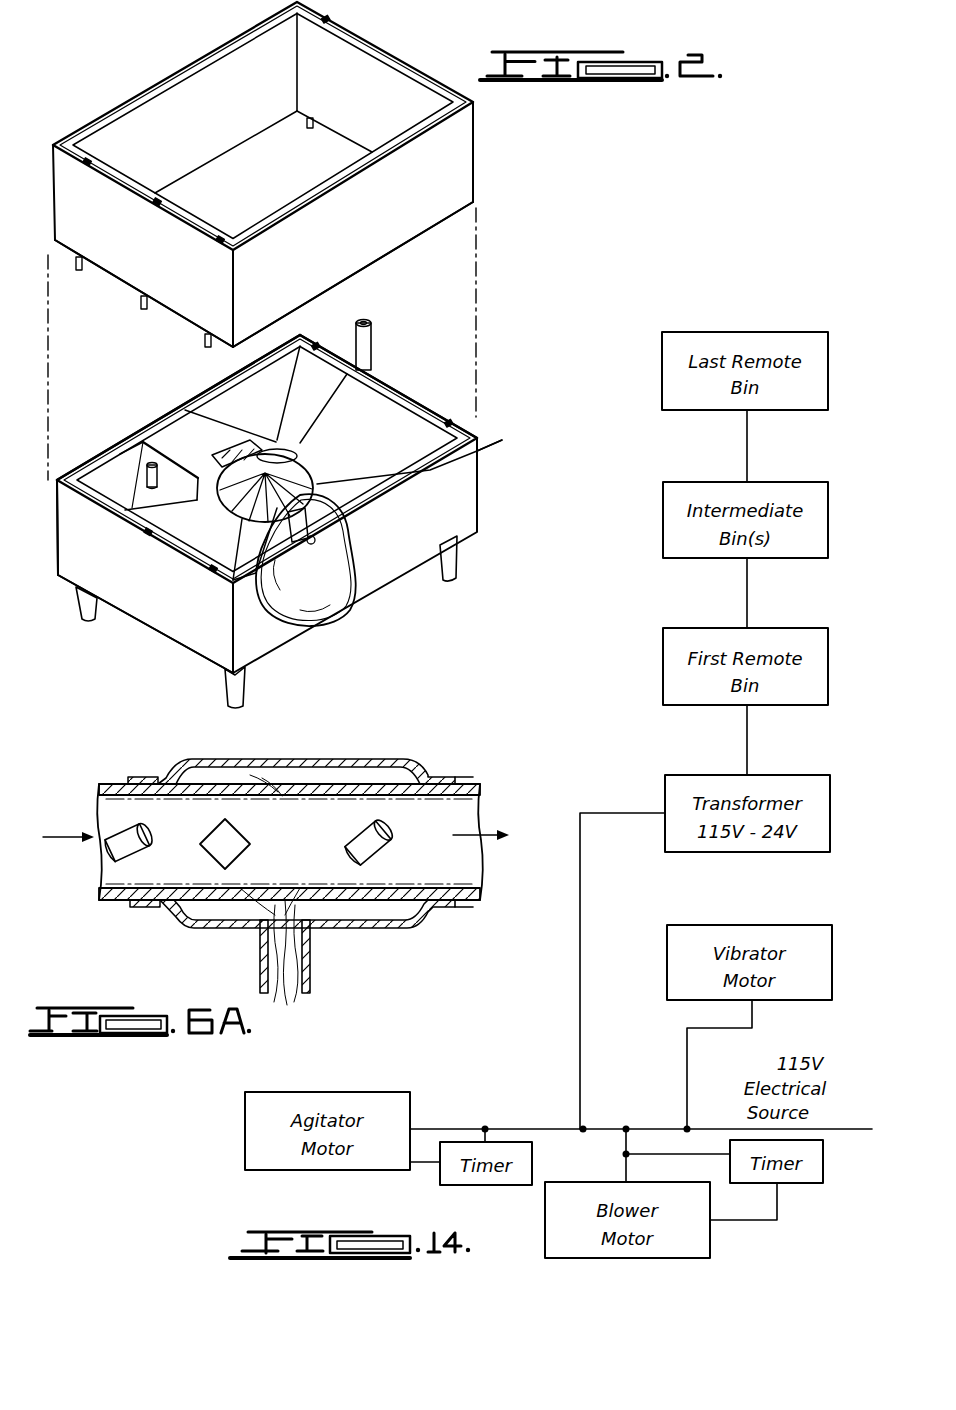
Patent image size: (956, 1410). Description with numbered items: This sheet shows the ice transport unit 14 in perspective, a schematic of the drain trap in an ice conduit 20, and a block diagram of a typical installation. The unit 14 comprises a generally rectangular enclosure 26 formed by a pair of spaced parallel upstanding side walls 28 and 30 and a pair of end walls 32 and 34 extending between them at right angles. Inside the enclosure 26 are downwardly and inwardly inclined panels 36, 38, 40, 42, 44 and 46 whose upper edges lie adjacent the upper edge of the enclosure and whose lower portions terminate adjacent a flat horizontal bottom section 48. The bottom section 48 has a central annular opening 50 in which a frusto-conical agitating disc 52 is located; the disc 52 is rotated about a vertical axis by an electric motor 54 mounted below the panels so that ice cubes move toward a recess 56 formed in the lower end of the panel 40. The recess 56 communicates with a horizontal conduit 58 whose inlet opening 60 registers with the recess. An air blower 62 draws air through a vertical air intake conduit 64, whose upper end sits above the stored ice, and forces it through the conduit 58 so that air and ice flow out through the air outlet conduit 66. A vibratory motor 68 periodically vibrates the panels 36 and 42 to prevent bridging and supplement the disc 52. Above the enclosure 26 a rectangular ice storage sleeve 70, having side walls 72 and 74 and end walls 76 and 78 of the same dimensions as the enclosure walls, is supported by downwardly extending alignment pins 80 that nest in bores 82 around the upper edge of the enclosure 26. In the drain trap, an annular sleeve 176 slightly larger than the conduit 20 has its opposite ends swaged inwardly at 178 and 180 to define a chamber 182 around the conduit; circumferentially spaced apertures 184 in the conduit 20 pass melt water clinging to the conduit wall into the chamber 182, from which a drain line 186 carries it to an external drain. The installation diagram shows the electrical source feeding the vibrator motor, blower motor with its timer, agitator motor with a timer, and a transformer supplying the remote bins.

In FIG. 2, the ice transport unit 14 is at (494, 485).
In FIG. 6A, the conduit 20 is at (479, 776).
In FIG. 2, the enclosure 26 is at (168, 641).
In FIG. 2, the side wall 28 is at (393, 574).
In FIG. 2, the side wall 30 is at (183, 403).
In FIG. 2, the end wall 32 is at (385, 392).
In FIG. 2, the end wall 34 is at (130, 593).
In FIG. 2, the inclined panel 36 is at (409, 450).
In FIG. 2, the inclined panel 38 is at (288, 403).
In FIG. 2, the inclined panel 40 is at (224, 450).
In FIG. 2, the inclined panel 42 is at (220, 547).
In FIG. 2, the inclined panel 44 is at (358, 498).
In FIG. 2, the inclined panel 46 is at (501, 451).
In FIG. 2, the bottom section 48 is at (350, 480).
In FIG. 2, the central annular opening 50 is at (305, 462).
In FIG. 2, the agitating disc 52 is at (232, 586).
In FIG. 2, the motor 54 is at (306, 560).
In FIG. 2, the recess 56 is at (237, 461).
In FIG. 2, the conduit 58 is at (207, 461).
In FIG. 2, the inlet opening 60 is at (330, 412).
In FIG. 2, the air blower 62 is at (123, 467).
In FIG. 2, the air intake conduit 64 is at (145, 603).
In FIG. 2, the air outlet conduit 66 is at (373, 333).
In FIG. 2, the vibratory motor 68 is at (312, 538).
In FIG. 2, the ice storage sleeve 70 is at (483, 156).
In FIG. 2, the side wall 72 is at (213, 75).
In FIG. 2, the side wall 74 is at (378, 231).
In FIG. 2, the end wall 76 is at (388, 111).
In FIG. 2, the end wall 78 is at (165, 264).
In FIG. 2, the alignment pins 80 is at (309, 128).
In FIG. 2, the bores 82 is at (316, 346).
In FIG. 6A, the annular sleeve 176 is at (300, 758).
In FIG. 6A, the swaged end 178 is at (444, 772).
In FIG. 6A, the swaged end 180 is at (140, 776).
In FIG. 6A, the chamber 182 is at (358, 772).
In FIG. 6A, the apertures 184 is at (272, 880).
In FIG. 6A, the drain line 186 is at (312, 958).